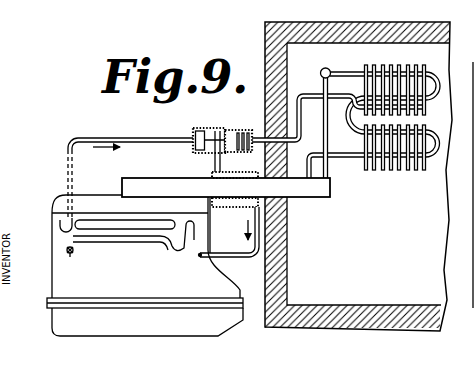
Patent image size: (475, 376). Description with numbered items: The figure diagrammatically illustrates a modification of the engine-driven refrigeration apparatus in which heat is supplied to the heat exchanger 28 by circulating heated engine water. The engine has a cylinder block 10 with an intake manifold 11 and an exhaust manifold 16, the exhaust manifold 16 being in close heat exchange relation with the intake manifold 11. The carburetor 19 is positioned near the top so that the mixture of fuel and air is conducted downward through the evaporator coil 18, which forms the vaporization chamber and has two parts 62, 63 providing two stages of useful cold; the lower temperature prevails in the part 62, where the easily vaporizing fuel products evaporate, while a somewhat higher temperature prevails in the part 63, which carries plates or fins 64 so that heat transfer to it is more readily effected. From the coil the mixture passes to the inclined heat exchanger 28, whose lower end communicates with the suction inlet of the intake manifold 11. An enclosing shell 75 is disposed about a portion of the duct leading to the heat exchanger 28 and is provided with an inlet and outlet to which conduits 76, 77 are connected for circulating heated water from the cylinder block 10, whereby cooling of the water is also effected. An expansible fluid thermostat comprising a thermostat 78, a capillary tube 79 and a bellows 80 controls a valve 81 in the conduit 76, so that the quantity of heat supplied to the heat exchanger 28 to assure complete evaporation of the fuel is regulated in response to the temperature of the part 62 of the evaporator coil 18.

The cylinder block 10 is at (56, 279).
The intake manifold 11 is at (95, 219).
The exhaust manifold 16 is at (110, 243).
The evaporator coil 18 is at (403, 173).
The carburetor 19 is at (324, 68).
The heat exchanger 28 is at (188, 174).
The part of the evaporator coil 62 is at (440, 73).
The part of the evaporator coil 63 is at (440, 157).
The plates or fins 64 is at (373, 170).
The enclosing shell 75 is at (234, 226).
The conduit 76 is at (159, 138).
The conduit 77 is at (228, 259).
The thermostat 78 is at (357, 75).
The capillary tube 79 is at (298, 96).
The bellows 80 is at (238, 129).
The valve 81 is at (212, 126).